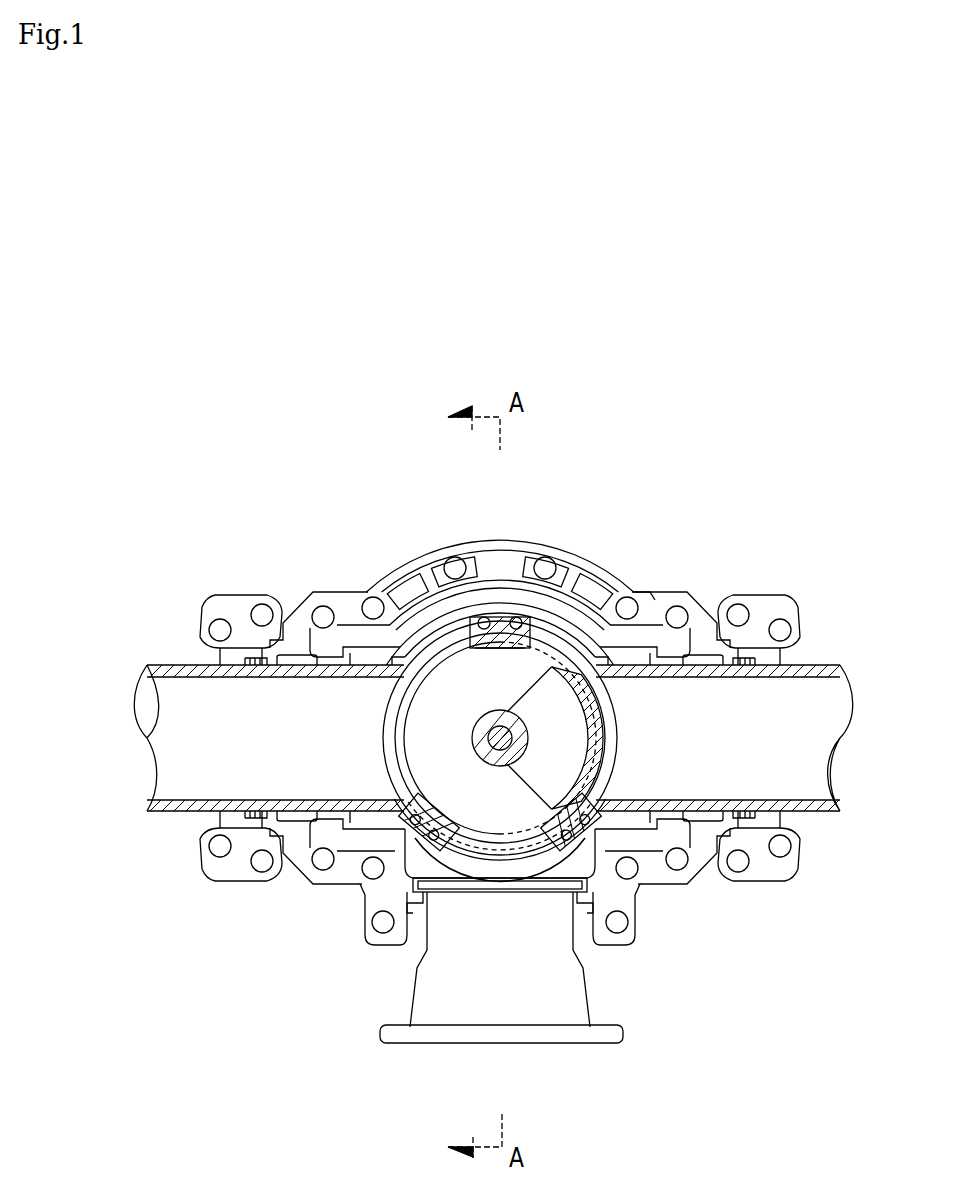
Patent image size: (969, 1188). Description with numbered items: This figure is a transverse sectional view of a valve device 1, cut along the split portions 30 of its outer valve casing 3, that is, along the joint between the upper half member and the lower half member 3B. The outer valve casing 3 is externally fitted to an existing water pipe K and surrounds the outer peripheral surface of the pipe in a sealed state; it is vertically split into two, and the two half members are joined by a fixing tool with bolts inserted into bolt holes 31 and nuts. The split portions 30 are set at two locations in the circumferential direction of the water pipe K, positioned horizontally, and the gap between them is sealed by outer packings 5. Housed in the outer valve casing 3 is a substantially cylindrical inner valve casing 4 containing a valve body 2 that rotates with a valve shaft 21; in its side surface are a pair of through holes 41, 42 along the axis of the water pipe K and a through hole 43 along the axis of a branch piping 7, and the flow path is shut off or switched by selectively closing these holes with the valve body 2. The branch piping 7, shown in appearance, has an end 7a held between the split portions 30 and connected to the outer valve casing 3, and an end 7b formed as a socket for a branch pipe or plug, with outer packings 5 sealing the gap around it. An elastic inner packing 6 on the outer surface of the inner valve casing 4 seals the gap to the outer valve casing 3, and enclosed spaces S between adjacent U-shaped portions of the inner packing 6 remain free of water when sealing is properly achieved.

The valve device 1 is at (281, 527).
The valve body 2 is at (593, 707).
The valve shaft 21 is at (485, 755).
The outer valve casing 3 is at (342, 568).
The lower half member 3B is at (693, 607).
The split portions 30 is at (540, 544).
The bolt holes 31 is at (310, 863).
The inner valve casing 4 is at (440, 647).
The through hole 41 is at (395, 735).
The through hole 42 is at (602, 763).
The through hole 43 is at (515, 840).
The outer packing 5 is at (650, 603).
The inner packing 6 is at (528, 613).
The branch piping 7 is at (412, 997).
The end 7a is at (458, 895).
The end 7b is at (553, 1043).
The water pipe K is at (167, 663).
The enclosed space S is at (502, 613).